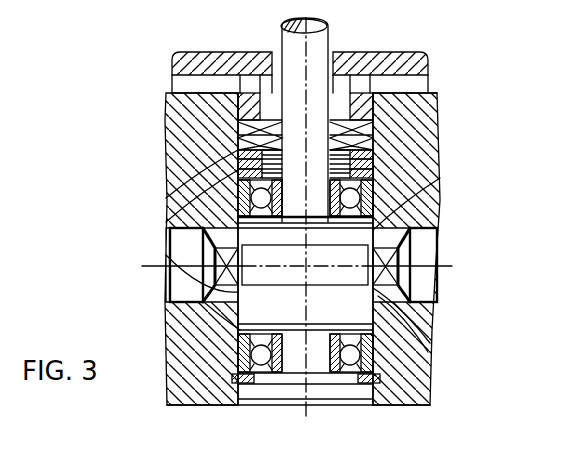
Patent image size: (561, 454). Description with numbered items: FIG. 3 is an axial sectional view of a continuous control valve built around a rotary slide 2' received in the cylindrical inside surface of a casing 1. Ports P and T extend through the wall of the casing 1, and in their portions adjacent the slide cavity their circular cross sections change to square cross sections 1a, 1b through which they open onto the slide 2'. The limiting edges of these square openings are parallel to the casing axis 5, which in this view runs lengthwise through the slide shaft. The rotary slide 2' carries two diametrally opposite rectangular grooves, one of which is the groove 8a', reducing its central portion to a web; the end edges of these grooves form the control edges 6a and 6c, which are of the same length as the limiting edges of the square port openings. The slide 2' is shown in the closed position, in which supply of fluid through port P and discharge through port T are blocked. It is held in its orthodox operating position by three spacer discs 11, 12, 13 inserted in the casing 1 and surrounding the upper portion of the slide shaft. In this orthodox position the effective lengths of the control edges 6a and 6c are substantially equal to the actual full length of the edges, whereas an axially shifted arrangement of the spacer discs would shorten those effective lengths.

The casing 1 is at (428, 63).
The casing axis 5 is at (332, 52).
The rectangular groove 8a' is at (307, 254).
The spacer disc 11 is at (238, 155).
The spacer disc 12 is at (238, 165).
The spacer disc 13 is at (238, 174).
The square cross section of port 1b is at (168, 283).
The control edge 6c is at (170, 318).
The square cross section of port 1a is at (412, 287).
The control edge 6a is at (430, 314).
The rotary slide 2' is at (353, 372).